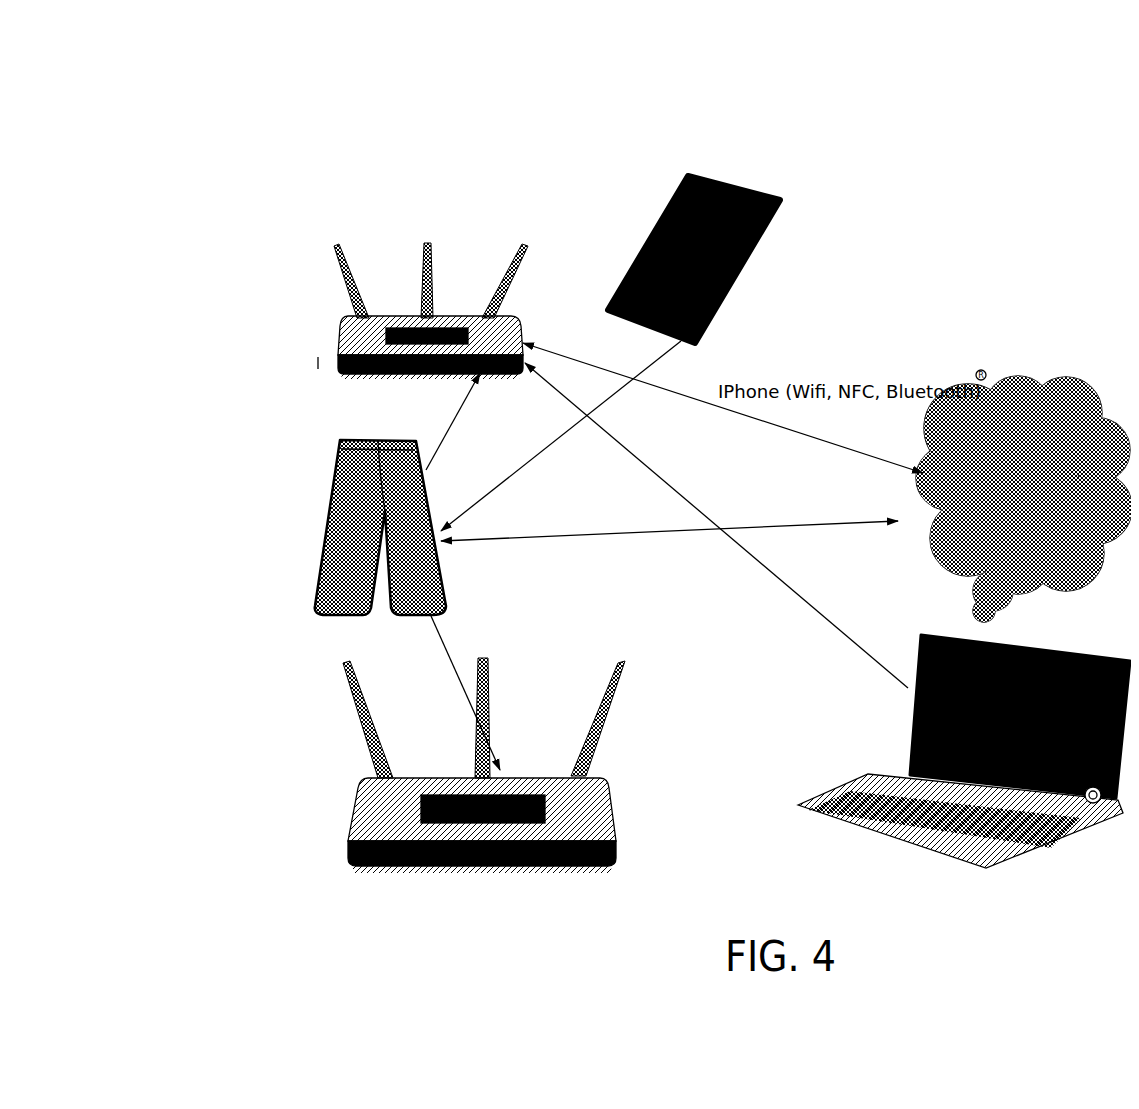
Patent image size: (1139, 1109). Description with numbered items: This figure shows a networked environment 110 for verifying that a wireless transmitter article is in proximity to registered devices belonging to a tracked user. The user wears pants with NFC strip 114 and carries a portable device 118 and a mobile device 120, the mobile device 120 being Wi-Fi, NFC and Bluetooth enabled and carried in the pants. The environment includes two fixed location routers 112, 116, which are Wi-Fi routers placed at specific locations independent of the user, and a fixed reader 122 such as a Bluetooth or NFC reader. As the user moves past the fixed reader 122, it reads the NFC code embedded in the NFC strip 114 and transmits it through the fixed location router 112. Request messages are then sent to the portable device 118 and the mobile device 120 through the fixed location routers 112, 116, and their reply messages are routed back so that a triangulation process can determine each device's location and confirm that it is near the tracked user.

The networked environment 110 is at (225, 170).
The fixed location router 112 is at (414, 421).
The pants with NFC strip 114 is at (361, 641).
The fixed location router 116 is at (492, 927).
The portable device 118 is at (988, 915).
The mobile device 120 is at (846, 318).
The fixed reader 122 is at (1138, 553).